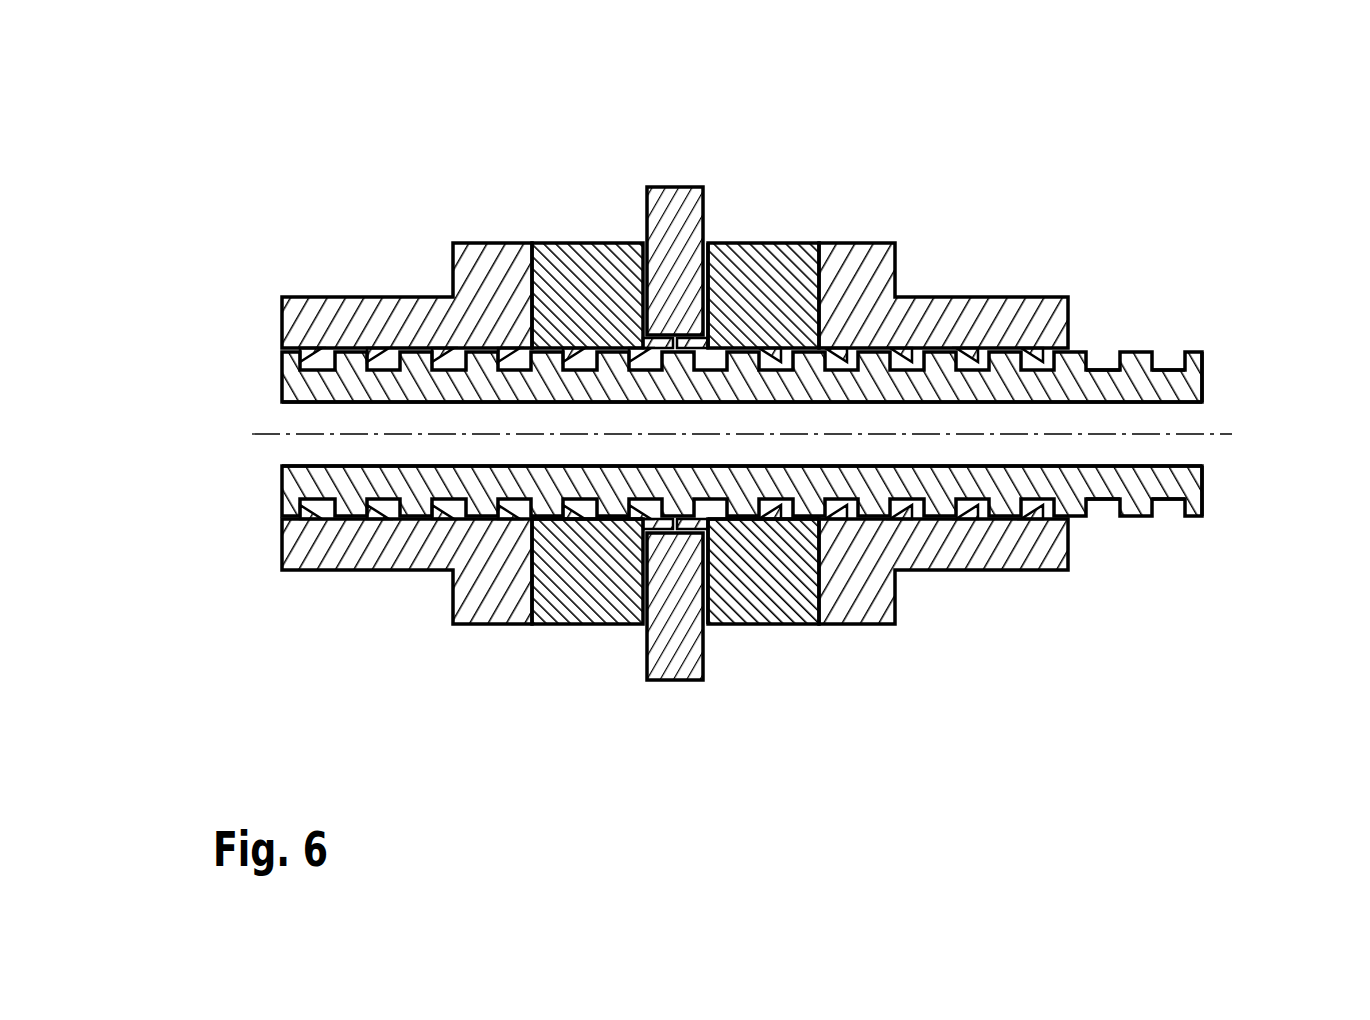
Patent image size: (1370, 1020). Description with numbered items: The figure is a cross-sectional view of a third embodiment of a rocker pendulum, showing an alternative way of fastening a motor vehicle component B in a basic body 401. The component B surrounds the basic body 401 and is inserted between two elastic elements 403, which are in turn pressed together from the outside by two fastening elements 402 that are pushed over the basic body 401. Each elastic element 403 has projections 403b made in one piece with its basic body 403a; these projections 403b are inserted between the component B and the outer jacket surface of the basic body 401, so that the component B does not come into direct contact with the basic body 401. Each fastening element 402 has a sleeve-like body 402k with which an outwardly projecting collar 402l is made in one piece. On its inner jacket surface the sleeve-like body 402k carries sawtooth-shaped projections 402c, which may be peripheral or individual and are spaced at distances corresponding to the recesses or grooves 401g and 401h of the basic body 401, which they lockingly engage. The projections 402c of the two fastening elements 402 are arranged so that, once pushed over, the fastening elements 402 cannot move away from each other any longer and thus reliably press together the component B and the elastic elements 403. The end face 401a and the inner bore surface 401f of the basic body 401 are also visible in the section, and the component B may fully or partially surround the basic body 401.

The basic body 401 is at (305, 390).
The end face of pipe 401a is at (1202, 383).
The inner bore surface of pipe 401f is at (300, 447).
The recesses or grooves 401g is at (1167, 352).
The outer groove of pipe (lower) 401h is at (1165, 510).
The fastening element 402 is at (418, 275).
The sawtooth-shaped projections 402c is at (442, 518).
The sleeve-like body 402k is at (345, 327).
The outwardly projecting collar 402l is at (480, 242).
The elastic element 403 is at (593, 242).
The basic body of elastic element 403a is at (578, 555).
The projections 403b is at (708, 242).
The motor vehicle component B is at (672, 187).